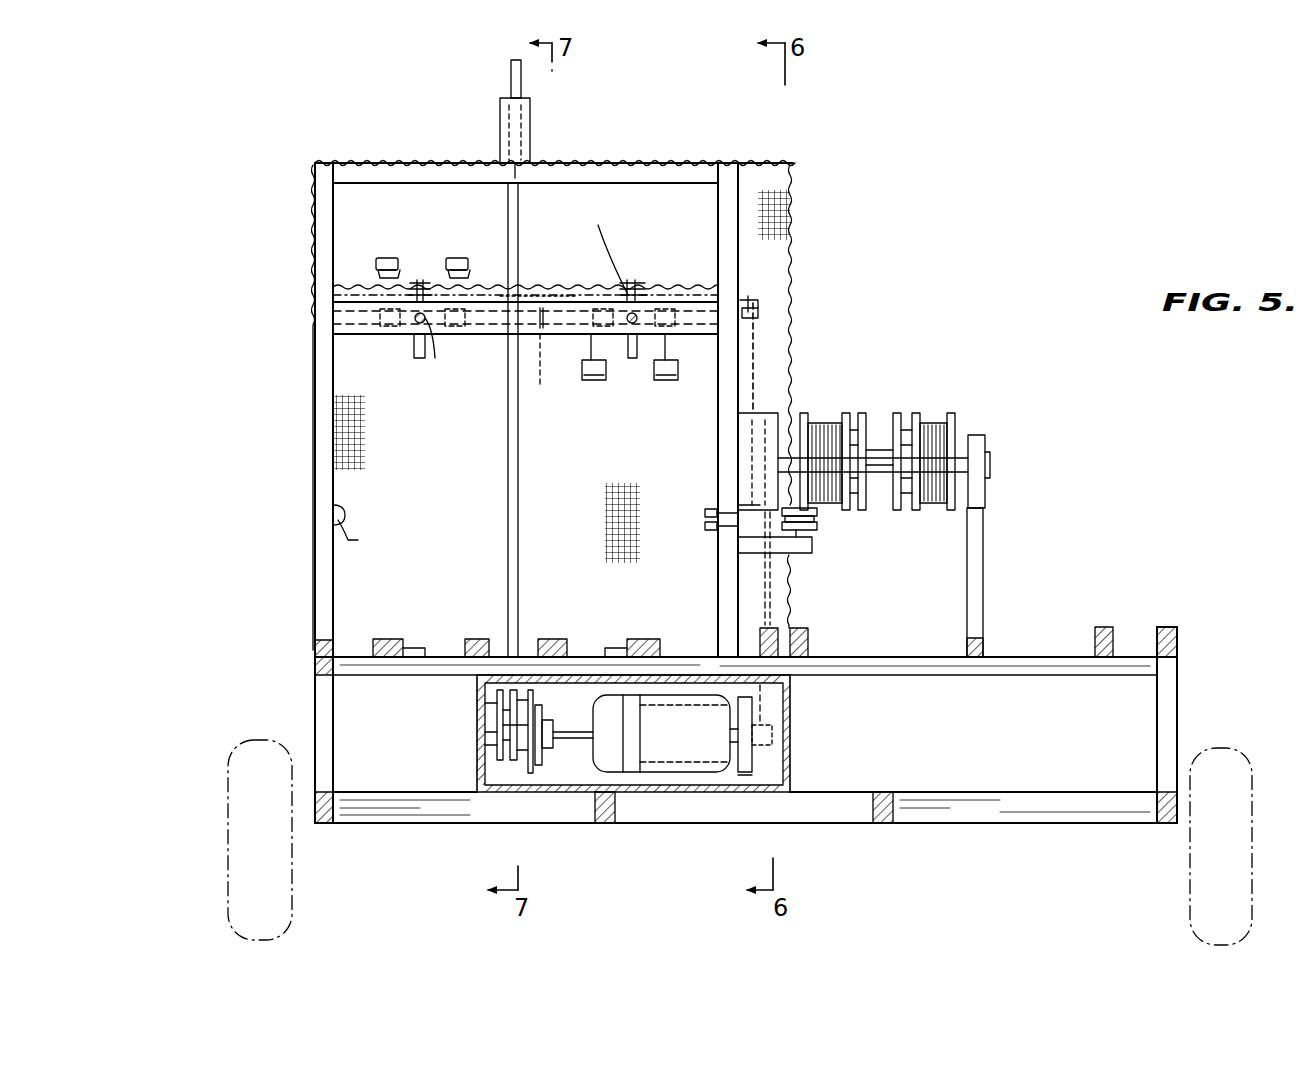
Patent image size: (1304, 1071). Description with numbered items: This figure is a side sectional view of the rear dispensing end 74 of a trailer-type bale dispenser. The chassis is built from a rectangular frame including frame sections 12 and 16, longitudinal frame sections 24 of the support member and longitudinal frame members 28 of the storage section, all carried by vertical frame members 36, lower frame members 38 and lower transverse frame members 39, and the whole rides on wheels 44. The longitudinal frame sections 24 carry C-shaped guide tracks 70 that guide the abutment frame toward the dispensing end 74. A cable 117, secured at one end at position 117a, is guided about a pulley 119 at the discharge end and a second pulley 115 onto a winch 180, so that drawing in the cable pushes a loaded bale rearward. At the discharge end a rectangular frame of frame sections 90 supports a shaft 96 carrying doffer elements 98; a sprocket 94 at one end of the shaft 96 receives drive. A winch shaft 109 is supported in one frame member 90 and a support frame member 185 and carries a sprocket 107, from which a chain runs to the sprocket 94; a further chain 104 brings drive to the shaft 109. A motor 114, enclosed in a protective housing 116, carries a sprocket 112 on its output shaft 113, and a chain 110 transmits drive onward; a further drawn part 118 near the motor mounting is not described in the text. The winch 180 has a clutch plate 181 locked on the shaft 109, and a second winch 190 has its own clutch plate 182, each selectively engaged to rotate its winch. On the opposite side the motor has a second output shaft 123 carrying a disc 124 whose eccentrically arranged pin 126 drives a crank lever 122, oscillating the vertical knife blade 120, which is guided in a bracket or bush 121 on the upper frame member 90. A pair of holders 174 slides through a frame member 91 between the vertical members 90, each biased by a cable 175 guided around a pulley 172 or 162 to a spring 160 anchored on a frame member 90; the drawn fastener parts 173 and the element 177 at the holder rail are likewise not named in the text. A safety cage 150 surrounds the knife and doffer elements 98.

The rectangular frame section 12 is at (1165, 625).
The rectangular frame section 16 is at (315, 652).
The longitudinal frame section 24 is at (495, 638).
The longitudinal frame member 28 is at (1103, 625).
The vertical frame member 36 is at (315, 712).
The lower frame member 38 is at (892, 830).
The lower transverse frame member 39 is at (1060, 795).
The wheel 44 is at (240, 748).
The C-shaped guide track 70 is at (430, 600).
The rear dispensing end 74 is at (425, 471).
The frame section 90 is at (322, 348).
The frame member 91 is at (493, 305).
The sprocket 94 is at (760, 304).
The shaft 96 is at (834, 307).
The doffer element 98 is at (386, 256).
The chain 104 is at (768, 690).
The sprocket 107 is at (740, 438).
The winch shaft 109 is at (967, 435).
The chain 110 is at (758, 358).
The sprocket 112 is at (748, 770).
The output shaft 113 is at (772, 736).
The motor 114 is at (684, 760).
The second pulley 115 is at (817, 530).
The housing 116 is at (480, 758).
The cable 117 is at (347, 528).
The cable securing position 117a is at (333, 514).
The motor mount 118 is at (740, 776).
The pulley 119 is at (712, 532).
The knife blade 120 is at (508, 520).
The bracket or bush 121 is at (528, 137).
The lever 122 is at (486, 738).
The second output shaft 123 is at (575, 740).
The disc 124 is at (530, 776).
The eccentrically arranged pin 126 is at (486, 698).
The safety cage 150 is at (790, 236).
The spring 160 is at (354, 283).
The pulley 162 is at (633, 290).
The pulley 172 is at (416, 283).
The fastener 173 is at (650, 300).
The holder 174 is at (627, 295).
The cable 175 is at (429, 291).
The cable 177 is at (526, 292).
The winch 180 is at (806, 412).
The clutch plate 181 is at (863, 412).
The clutch plate 182 is at (895, 515).
The support frame member 185 is at (975, 610).
The second winch 190 is at (948, 515).